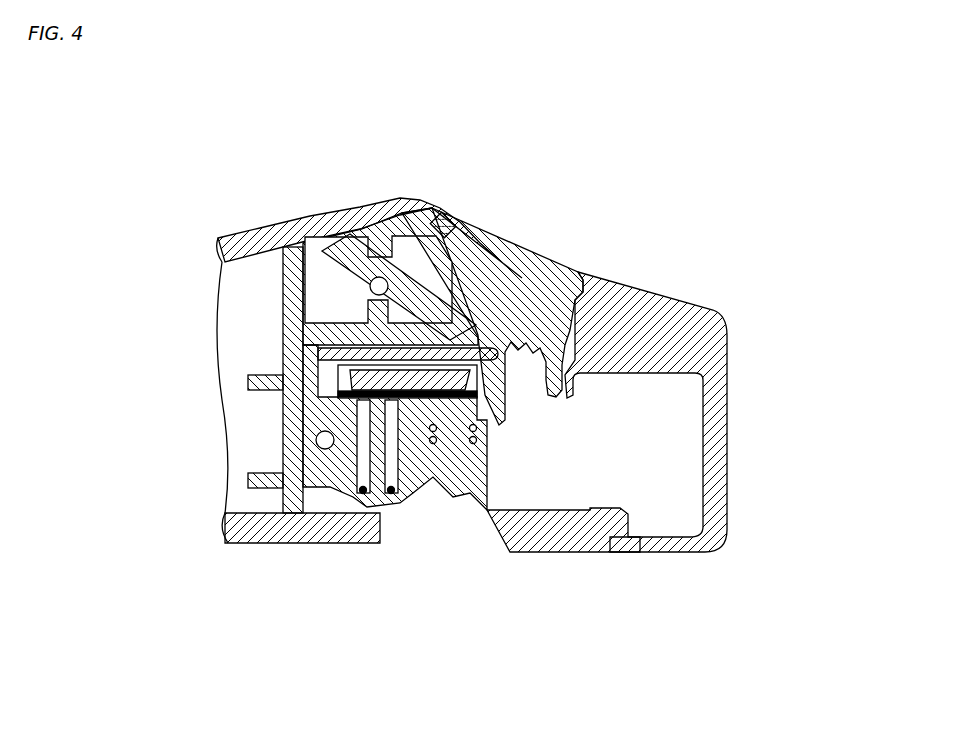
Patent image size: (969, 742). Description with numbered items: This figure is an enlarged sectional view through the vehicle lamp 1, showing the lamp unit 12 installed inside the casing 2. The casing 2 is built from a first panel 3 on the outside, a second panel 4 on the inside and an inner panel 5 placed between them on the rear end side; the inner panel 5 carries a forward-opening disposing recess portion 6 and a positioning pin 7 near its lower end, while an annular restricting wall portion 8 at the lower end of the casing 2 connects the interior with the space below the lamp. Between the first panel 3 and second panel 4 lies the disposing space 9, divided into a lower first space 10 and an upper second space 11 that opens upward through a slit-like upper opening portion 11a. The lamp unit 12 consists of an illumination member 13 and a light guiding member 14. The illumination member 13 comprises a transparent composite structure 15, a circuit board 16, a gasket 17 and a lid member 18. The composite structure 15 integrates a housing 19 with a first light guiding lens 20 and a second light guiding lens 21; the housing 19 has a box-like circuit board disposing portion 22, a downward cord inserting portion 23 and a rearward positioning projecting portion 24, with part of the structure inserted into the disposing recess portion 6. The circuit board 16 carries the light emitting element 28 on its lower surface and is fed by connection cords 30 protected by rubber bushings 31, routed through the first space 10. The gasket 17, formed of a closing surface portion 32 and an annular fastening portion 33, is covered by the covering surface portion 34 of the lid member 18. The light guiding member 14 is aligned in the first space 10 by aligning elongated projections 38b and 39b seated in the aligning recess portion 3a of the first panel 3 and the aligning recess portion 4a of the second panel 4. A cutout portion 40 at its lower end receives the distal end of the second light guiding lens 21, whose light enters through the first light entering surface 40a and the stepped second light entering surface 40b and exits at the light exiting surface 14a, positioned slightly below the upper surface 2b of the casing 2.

The vehicle lamp 1 is at (198, 160).
The casing 2 is at (360, 660).
The upper surface 2b is at (413, 200).
The first panel 3 is at (622, 550).
The aligning recess portion 3a is at (680, 352).
The second panel 4 is at (330, 530).
The aligning recess portion 4a is at (490, 255).
The inner panel 5 is at (403, 635).
The disposing recess portion 6 is at (305, 458).
The positioning pin 7 is at (257, 540).
The restricting wall portion 8 is at (487, 520).
The disposing space 9 is at (624, 452).
The first space 10 is at (705, 500).
The second space 11 is at (640, 330).
The upper opening portion 11a is at (578, 272).
The lamp unit 12 is at (452, 94).
The illumination member 13 is at (350, 238).
The light guiding member 14 is at (444, 110).
The light exiting surface 14a is at (582, 270).
The composite structure 15 is at (335, 388).
The circuit board 16 is at (340, 415).
The gasket 17 is at (530, 300).
The lid member 18 is at (340, 300).
The housing 19 is at (330, 373).
The first light guiding lens 20 is at (452, 498).
The second light guiding lens 21 is at (575, 425).
The circuit board disposing portion 22 is at (515, 338).
The cord inserting portion 23 is at (418, 500).
The positioning projecting portion 24 is at (316, 440).
The light emitting element 28 is at (478, 413).
The connection cords 30 is at (393, 505).
The bushings 31 is at (372, 522).
The closing surface portion 32 is at (505, 280).
The annular fastening portion 33 is at (315, 372).
The covering surface portion 34 is at (312, 248).
The aligning elongated projections 38b is at (688, 344).
The aligning elongated projections 39b is at (440, 220).
The cutout portion 40 is at (575, 410).
The first light entering surface 40a is at (700, 334).
The second light entering surface 40b is at (565, 360).